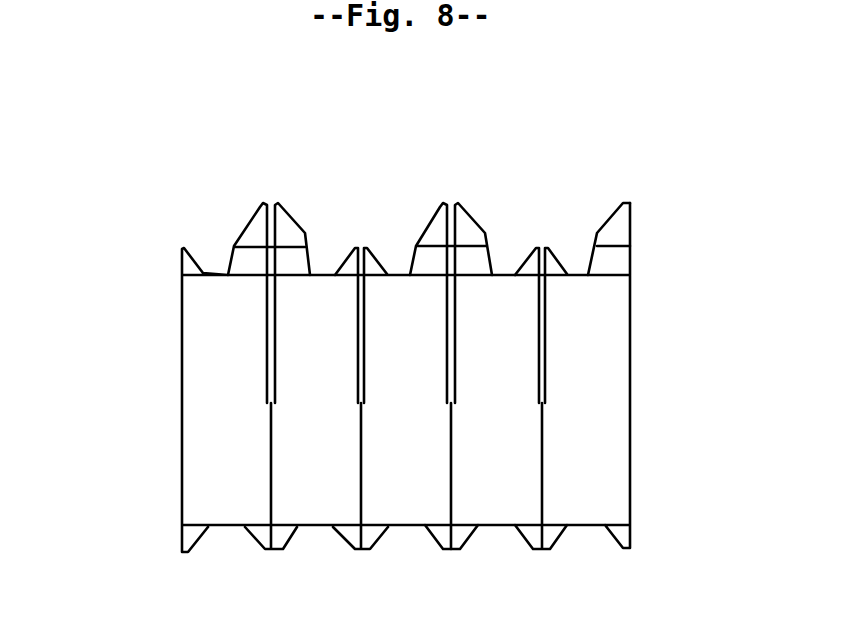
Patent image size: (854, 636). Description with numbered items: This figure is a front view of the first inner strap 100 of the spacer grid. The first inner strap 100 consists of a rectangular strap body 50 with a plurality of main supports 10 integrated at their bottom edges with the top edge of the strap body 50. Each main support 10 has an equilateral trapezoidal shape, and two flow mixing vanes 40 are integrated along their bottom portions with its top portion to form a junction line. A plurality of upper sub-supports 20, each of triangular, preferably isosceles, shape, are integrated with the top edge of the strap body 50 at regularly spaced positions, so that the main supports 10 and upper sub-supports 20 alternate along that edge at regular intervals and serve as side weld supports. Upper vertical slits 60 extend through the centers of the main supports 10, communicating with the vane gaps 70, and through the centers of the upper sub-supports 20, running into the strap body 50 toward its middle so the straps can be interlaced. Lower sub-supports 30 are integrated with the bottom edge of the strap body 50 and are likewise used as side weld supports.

The first inner strap 100 is at (137, 153).
The main support 10 is at (418, 258).
The upper sub-support 20 is at (516, 272).
The lower sub-support 30 is at (438, 533).
The flow mixing vane 40 is at (296, 231).
The strap body 50 is at (632, 418).
The upper vertical slit 60 is at (269, 328).
The vane gap 70 is at (258, 211).